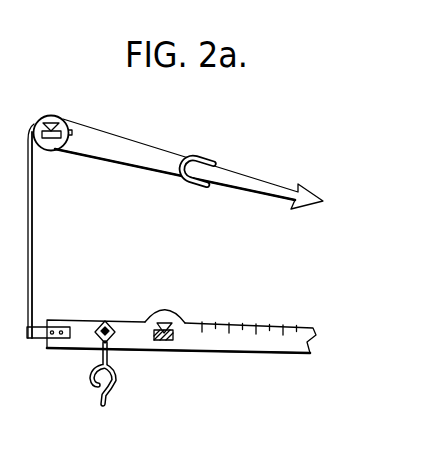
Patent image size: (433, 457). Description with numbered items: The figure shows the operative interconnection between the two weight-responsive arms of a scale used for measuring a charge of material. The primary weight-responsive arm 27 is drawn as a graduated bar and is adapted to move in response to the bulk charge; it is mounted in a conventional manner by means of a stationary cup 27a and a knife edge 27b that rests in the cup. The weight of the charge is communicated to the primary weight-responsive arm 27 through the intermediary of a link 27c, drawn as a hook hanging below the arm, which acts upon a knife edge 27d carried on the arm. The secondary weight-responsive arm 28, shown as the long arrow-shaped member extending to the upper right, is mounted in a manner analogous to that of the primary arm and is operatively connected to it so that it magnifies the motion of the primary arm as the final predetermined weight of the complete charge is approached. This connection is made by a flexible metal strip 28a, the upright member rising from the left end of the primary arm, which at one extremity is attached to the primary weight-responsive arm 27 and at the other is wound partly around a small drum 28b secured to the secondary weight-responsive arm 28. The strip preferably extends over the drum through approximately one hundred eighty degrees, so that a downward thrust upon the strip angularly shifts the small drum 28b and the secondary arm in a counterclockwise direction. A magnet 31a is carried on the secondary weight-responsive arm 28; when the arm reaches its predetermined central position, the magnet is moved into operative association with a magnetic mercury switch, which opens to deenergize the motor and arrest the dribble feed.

The primary weight-responsive arm 27 is at (288, 330).
The stationary cup 27a is at (158, 345).
The knife edge 27b is at (165, 321).
The link 27c is at (100, 352).
The knife edge 27d is at (130, 304).
The secondary weight-responsive arm 28 is at (282, 183).
The flexible metal strip 28a is at (33, 237).
The small drum 28b is at (52, 151).
The magnet 31a is at (200, 157).